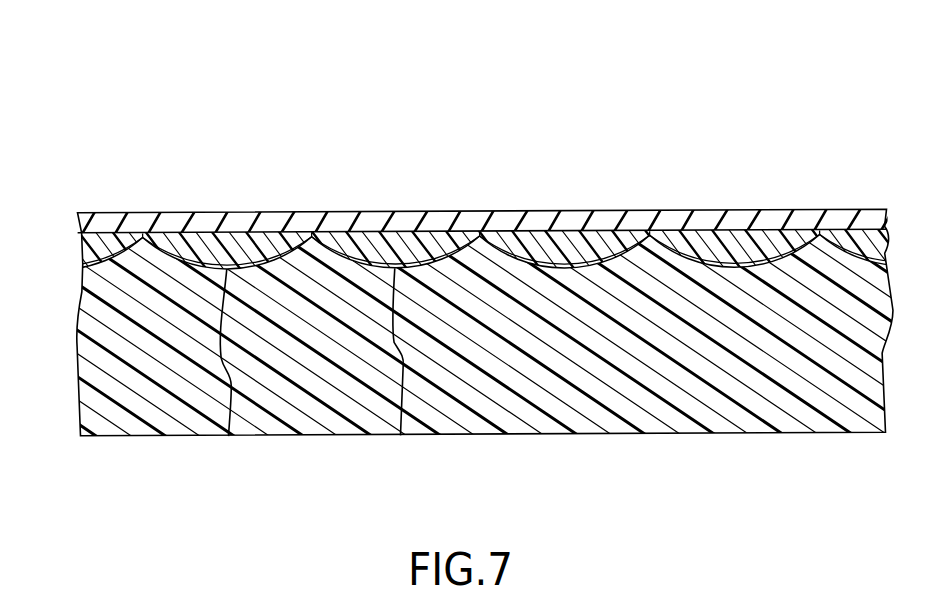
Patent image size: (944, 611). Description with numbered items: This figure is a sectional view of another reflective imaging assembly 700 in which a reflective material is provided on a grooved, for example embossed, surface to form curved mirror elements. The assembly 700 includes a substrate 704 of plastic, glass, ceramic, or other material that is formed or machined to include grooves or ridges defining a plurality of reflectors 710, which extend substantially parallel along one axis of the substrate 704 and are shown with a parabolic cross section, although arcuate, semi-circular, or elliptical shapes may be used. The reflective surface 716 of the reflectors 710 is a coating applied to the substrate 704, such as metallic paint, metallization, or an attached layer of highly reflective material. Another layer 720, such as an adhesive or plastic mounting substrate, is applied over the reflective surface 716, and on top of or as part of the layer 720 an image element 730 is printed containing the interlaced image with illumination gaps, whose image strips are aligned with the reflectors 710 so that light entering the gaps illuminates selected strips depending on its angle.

The reflective imaging assembly 700 is at (168, 141).
The substrate 704 is at (736, 360).
The reflectors 710 is at (228, 435).
The reflective surface 716 is at (83, 268).
The layer 720 is at (97, 245).
The image element 730 is at (265, 211).